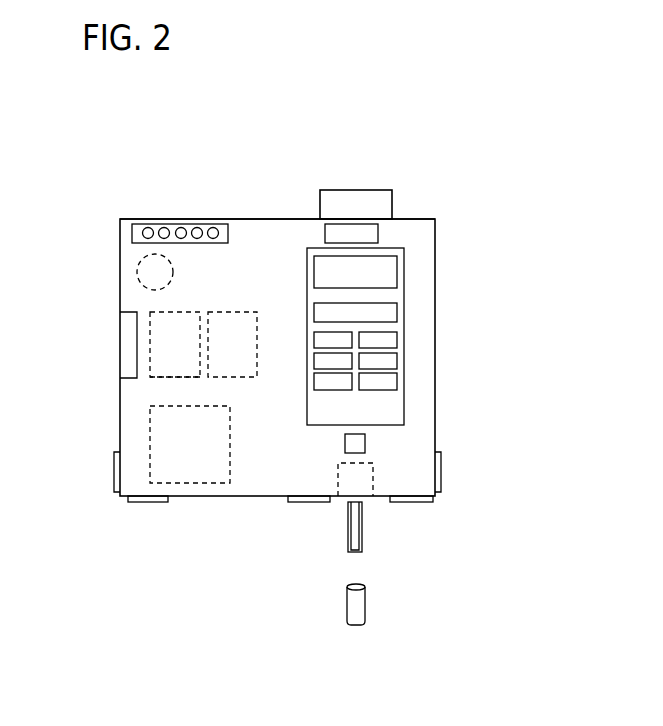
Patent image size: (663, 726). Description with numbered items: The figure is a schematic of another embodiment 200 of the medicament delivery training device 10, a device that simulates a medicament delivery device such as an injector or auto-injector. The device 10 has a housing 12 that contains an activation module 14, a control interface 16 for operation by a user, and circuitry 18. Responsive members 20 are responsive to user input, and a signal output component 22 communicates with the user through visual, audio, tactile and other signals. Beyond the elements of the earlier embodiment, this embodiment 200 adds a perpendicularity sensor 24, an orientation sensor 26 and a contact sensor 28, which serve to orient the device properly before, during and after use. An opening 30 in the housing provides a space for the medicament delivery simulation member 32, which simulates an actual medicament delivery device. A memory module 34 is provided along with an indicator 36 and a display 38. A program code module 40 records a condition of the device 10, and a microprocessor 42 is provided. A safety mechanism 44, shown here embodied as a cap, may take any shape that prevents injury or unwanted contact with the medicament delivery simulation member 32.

The embodiment 200 is at (308, 90).
The medicament delivery training device 10 is at (446, 219).
The housing 12 is at (265, 218).
The activation module 14 is at (370, 200).
The control interface 16 is at (406, 317).
The circuitry 18 is at (173, 440).
The responsive members 20 is at (386, 361).
The signal output component 22 is at (141, 260).
The perpendicularity sensor 24 is at (116, 474).
The orientation sensor 26 is at (362, 443).
The contact sensor 28 is at (300, 501).
The opening 30 is at (358, 484).
The medicament delivery simulation member 32 is at (355, 553).
The memory module 34 is at (128, 332).
The indicator 36 is at (367, 233).
The display 38 is at (392, 277).
The program code module 40 is at (160, 372).
The microprocessor 42 is at (217, 318).
The safety mechanism 44 is at (356, 596).